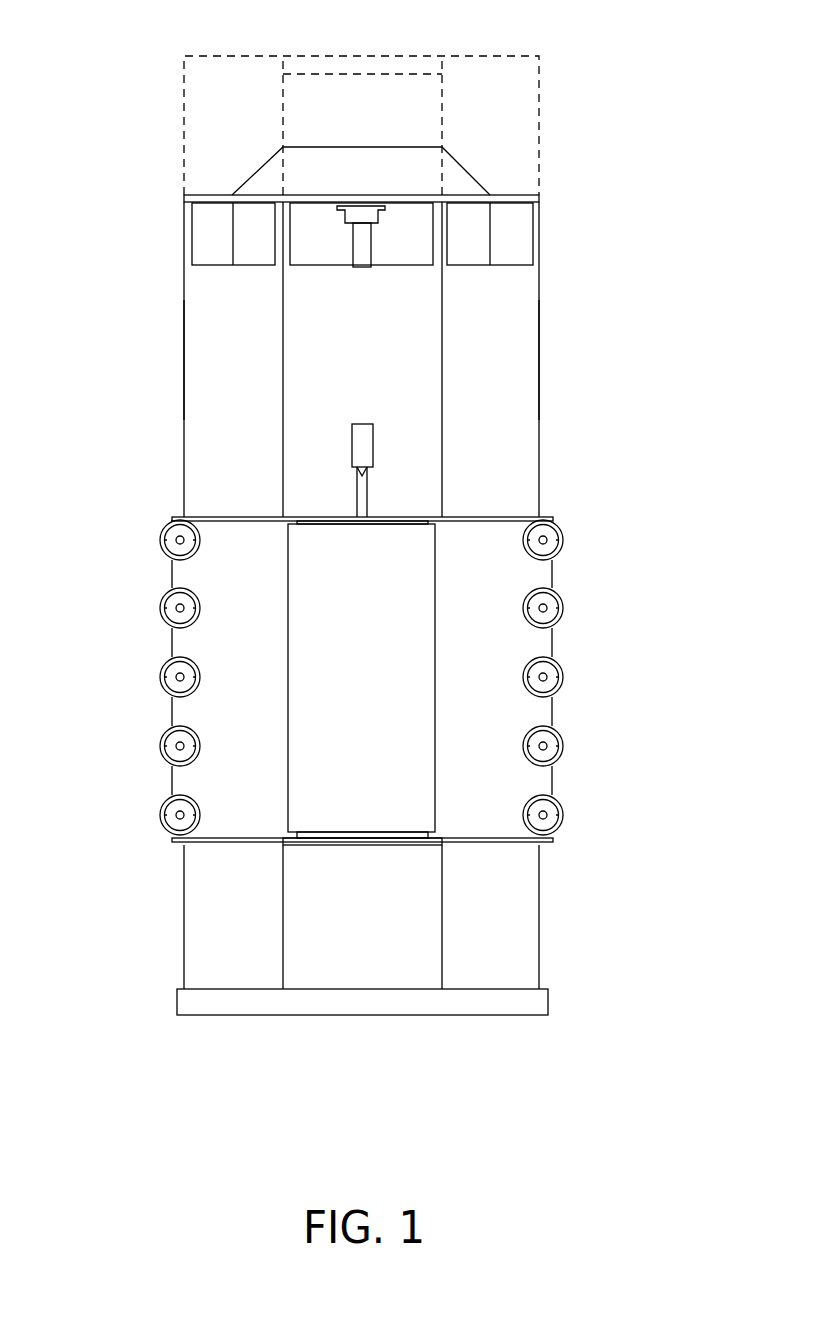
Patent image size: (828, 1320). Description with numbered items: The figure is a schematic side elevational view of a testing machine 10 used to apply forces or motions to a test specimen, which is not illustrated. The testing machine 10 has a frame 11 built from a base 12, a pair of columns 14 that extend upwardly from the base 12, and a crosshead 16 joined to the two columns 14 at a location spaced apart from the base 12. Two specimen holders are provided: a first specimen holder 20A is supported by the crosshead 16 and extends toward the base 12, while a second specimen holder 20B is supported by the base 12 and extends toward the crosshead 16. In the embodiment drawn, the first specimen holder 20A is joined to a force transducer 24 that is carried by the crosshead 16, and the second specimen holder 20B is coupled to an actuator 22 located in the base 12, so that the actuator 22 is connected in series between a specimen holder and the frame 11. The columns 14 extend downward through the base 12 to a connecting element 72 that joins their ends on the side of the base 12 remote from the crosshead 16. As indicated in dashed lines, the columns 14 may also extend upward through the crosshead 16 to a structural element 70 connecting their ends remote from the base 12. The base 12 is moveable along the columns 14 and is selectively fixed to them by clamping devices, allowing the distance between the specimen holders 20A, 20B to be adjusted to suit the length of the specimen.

The testing machine 10 is at (557, 135).
The frame 11 is at (558, 273).
The base 12 is at (553, 570).
The columns 14 is at (184, 358).
The crosshead 16 is at (527, 195).
The first specimen holder 20A is at (347, 248).
The second specimen holder 20B is at (352, 456).
The actuator 22 is at (367, 497).
The force transducer 24 is at (340, 208).
The structural element 70 is at (367, 56).
The connecting element 72 is at (548, 1002).